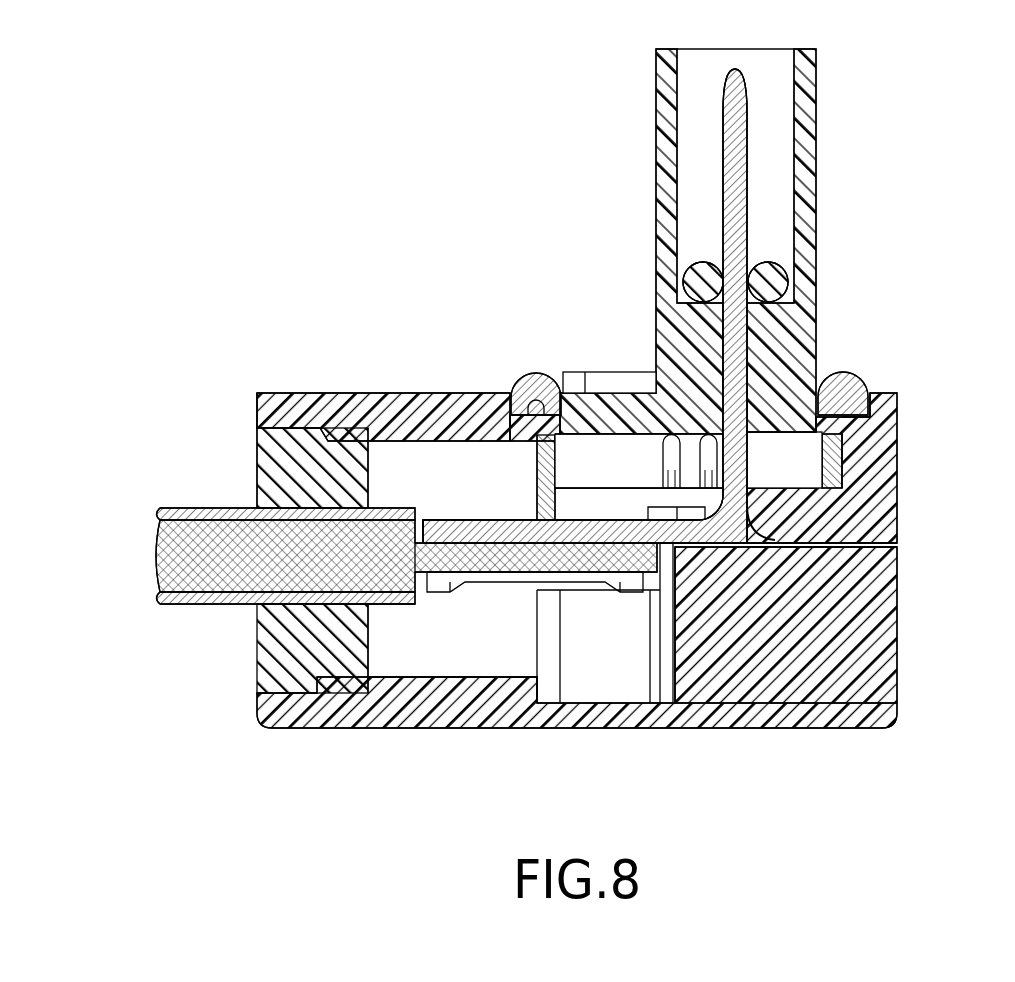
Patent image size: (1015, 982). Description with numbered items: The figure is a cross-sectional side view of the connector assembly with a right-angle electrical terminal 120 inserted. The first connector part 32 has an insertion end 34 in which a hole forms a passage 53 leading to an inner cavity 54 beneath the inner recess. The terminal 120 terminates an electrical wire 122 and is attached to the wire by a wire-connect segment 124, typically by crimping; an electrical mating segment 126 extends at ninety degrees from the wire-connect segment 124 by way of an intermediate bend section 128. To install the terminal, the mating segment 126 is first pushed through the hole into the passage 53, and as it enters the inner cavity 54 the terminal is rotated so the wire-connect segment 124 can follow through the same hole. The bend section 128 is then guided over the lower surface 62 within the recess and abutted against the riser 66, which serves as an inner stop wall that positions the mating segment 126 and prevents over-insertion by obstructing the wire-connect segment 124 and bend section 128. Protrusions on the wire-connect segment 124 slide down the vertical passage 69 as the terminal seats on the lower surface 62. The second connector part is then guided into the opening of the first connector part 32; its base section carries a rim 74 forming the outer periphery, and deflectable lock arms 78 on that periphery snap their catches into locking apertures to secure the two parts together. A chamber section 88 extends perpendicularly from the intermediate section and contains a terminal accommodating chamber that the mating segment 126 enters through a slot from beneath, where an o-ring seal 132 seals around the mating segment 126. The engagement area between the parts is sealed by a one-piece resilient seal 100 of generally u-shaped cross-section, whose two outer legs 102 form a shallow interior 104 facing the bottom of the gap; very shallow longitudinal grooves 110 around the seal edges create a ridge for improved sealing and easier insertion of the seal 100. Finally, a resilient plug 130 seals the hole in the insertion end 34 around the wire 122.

The first connector part 32 is at (850, 642).
The insertion end 34 is at (258, 405).
The passage 53 is at (402, 663).
The inner cavity 54 is at (602, 677).
The lower surface 62 is at (738, 543).
The riser 66 is at (747, 538).
The vertical passage 69 is at (685, 510).
The rim 74 is at (833, 473).
The lock arm 78 is at (690, 462).
The chamber section 88 is at (805, 97).
The seal 100 is at (540, 385).
The outer legs 102 is at (515, 412).
The shallow interior 104 is at (862, 425).
The grooves 110 is at (860, 384).
The right-angle electrical terminal 120 is at (663, 545).
The electrical wire 122 is at (190, 530).
The wire-connect segment 124 is at (562, 575).
The mating segment 126 is at (735, 168).
The bend section 128 is at (750, 517).
The resilient plug 130 is at (270, 643).
The o-ring seal 132 is at (772, 272).